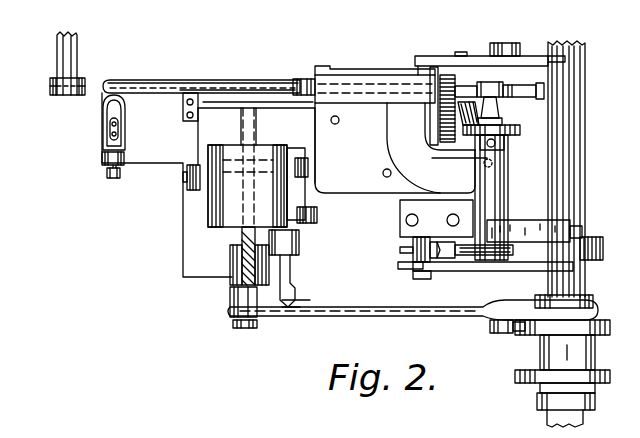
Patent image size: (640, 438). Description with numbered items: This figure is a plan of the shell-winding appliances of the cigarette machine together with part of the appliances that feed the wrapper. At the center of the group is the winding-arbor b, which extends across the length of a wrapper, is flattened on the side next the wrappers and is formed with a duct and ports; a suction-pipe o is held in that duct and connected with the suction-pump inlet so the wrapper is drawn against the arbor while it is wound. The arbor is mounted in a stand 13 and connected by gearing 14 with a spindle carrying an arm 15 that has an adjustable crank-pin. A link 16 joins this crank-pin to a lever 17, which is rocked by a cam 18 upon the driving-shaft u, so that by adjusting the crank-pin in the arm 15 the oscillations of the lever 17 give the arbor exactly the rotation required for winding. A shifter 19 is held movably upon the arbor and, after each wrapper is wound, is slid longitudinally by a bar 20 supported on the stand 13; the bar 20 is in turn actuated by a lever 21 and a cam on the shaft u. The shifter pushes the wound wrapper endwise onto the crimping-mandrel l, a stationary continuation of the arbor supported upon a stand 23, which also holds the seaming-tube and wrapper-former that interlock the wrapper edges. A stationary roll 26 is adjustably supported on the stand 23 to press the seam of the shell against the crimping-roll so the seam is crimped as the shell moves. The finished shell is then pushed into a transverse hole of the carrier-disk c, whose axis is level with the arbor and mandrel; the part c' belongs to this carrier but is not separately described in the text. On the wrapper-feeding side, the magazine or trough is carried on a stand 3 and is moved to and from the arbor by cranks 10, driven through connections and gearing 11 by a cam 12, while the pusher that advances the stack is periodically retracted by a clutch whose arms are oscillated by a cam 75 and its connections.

The carrier-disk c is at (78, 63).
The cylinder collar c' is at (47, 82).
The crimping-mandrel l is at (150, 80).
The winding-arbor b is at (222, 80).
The stationary roll 26 is at (102, 100).
The stand 23 is at (208, 185).
The shifter 19 is at (296, 82).
The bar 20 is at (366, 68).
The stand 13 is at (363, 105).
The gearing 14 is at (447, 128).
The suction-pipe o is at (533, 96).
The lever 21 is at (586, 56).
The driving-shaft u is at (586, 136).
The arm 15 is at (525, 218).
The cranks 10 is at (197, 188).
The stand 3 is at (207, 213).
The connections and gearing 11 is at (313, 233).
The link 16 is at (470, 255).
The lever 17 is at (500, 268).
The cam 18 is at (606, 262).
The cam 12 is at (528, 330).
The cam 75 is at (607, 387).